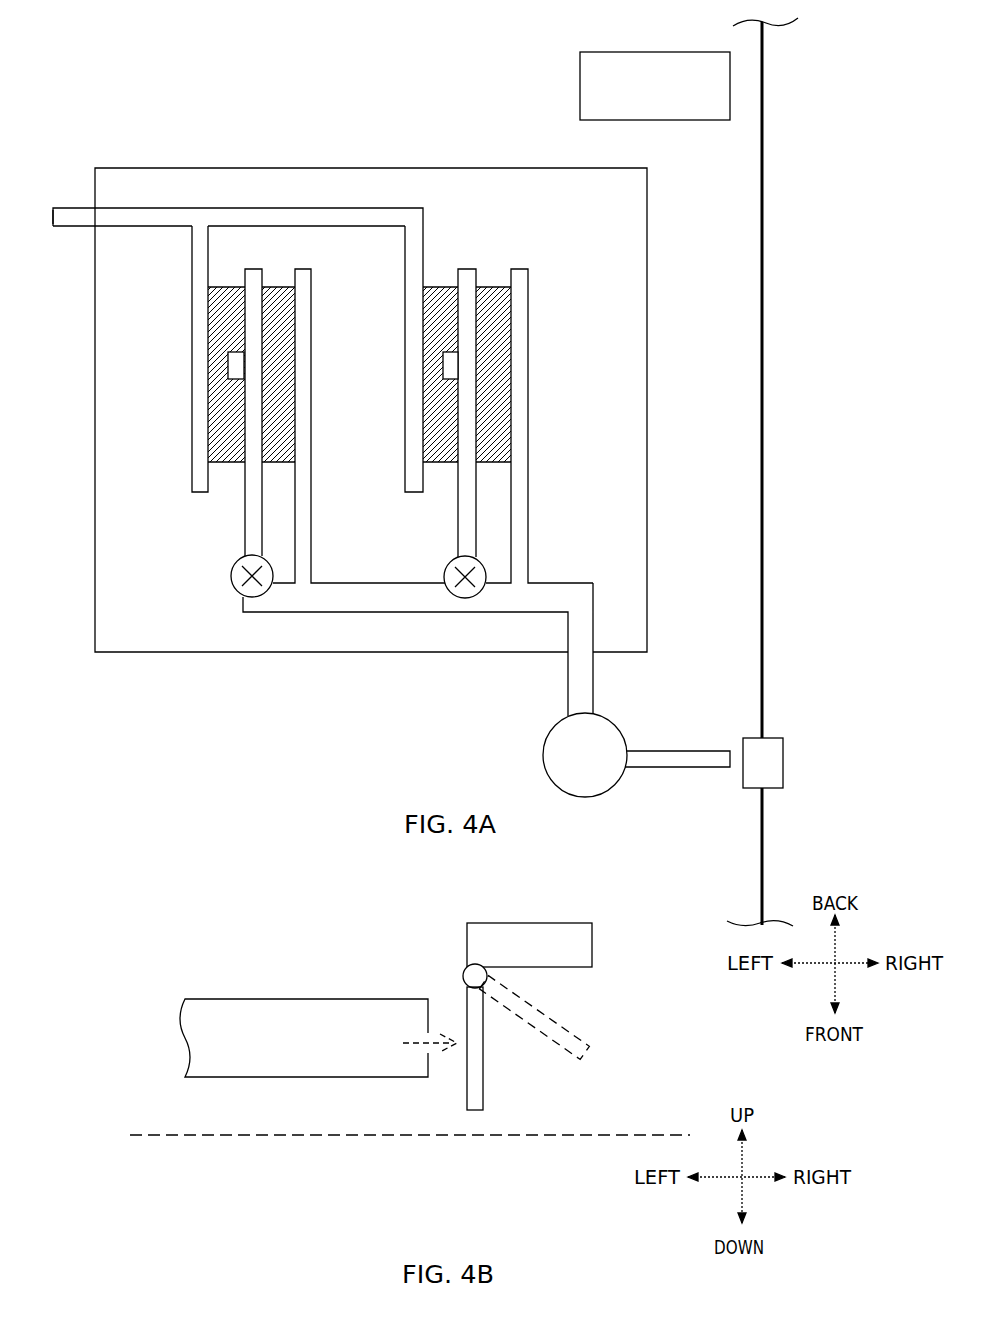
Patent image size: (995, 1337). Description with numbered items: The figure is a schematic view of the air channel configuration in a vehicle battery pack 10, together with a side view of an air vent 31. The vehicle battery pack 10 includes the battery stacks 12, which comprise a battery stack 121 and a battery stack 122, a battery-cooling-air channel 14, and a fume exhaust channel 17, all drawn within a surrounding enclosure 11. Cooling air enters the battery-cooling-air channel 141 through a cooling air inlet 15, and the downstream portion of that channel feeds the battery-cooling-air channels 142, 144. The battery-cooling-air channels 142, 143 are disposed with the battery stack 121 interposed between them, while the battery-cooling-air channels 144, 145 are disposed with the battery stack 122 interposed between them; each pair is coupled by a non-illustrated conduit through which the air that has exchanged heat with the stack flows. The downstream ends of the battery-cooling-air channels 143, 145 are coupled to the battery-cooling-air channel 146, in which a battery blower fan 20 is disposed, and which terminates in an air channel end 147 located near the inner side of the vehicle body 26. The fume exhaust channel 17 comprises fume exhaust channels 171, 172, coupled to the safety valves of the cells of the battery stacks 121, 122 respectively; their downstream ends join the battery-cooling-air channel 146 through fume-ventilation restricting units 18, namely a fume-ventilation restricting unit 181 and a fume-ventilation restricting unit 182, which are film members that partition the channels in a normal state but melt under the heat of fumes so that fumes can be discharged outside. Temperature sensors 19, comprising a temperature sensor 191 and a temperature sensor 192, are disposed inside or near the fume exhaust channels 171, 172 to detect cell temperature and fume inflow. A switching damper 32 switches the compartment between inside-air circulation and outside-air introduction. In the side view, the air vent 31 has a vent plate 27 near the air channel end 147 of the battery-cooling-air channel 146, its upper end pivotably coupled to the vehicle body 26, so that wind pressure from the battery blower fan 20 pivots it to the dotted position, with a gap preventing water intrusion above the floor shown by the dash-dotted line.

In FIG. 4A, the vehicle battery pack 10 is at (355, 128).
In FIG. 4A, the housing 11 is at (545, 415).
In FIG. 4A, the battery stacks 12 is at (276, 485).
In FIG. 4A, the battery-cooling-air channel 14 is at (232, 185).
In FIG. 4A, the cooling air inlet 15 is at (57, 207).
In FIG. 4A, the fume exhaust channel 17 is at (444, 227).
In FIG. 4A, the valves 18 is at (232, 553).
In FIG. 4A, the temperature sensors 19 is at (178, 393).
In FIG. 4A, the battery blower fan 20 is at (585, 798).
In FIG. 4A, the vehicle body 26 is at (770, 116).
In FIG. 4B, the vent plate 27 is at (466, 1105).
In FIG. 4A, the air vent 31 is at (784, 750).
In FIG. 4B, the air vent 31 is at (449, 910).
In FIG. 4A, the switching damper 32 is at (580, 85).
In FIG. 4A, the battery stack 121 is at (233, 466).
In FIG. 4A, the battery stack 122 is at (443, 466).
In FIG. 4A, the battery-cooling-air channel 141 is at (157, 207).
In FIG. 4A, the battery-cooling-air channel 142 is at (192, 268).
In FIG. 4A, the battery-cooling-air channel 143 is at (316, 275).
In FIG. 4A, the battery-cooling-air channel 144 is at (403, 325).
In FIG. 4A, the battery-cooling-air channel 145 is at (531, 325).
In FIG. 4A, the battery-cooling-air channel 146 is at (383, 613).
In FIG. 4B, the battery-cooling-air channel 146 is at (295, 998).
In FIG. 4A, the air channel end 147 is at (718, 750).
In FIG. 4B, the air channel end 147 is at (428, 998).
In FIG. 4A, the fume exhaust channel 171 is at (253, 268).
In FIG. 4A, the fume exhaust channel 172 is at (468, 268).
In FIG. 4A, the fume-ventilation restricting unit 181 is at (231, 573).
In FIG. 4A, the fume-ventilation restricting unit 182 is at (444, 576).
In FIG. 4A, the temperature sensor 191 is at (227, 368).
In FIG. 4A, the temperature sensor 192 is at (441, 368).